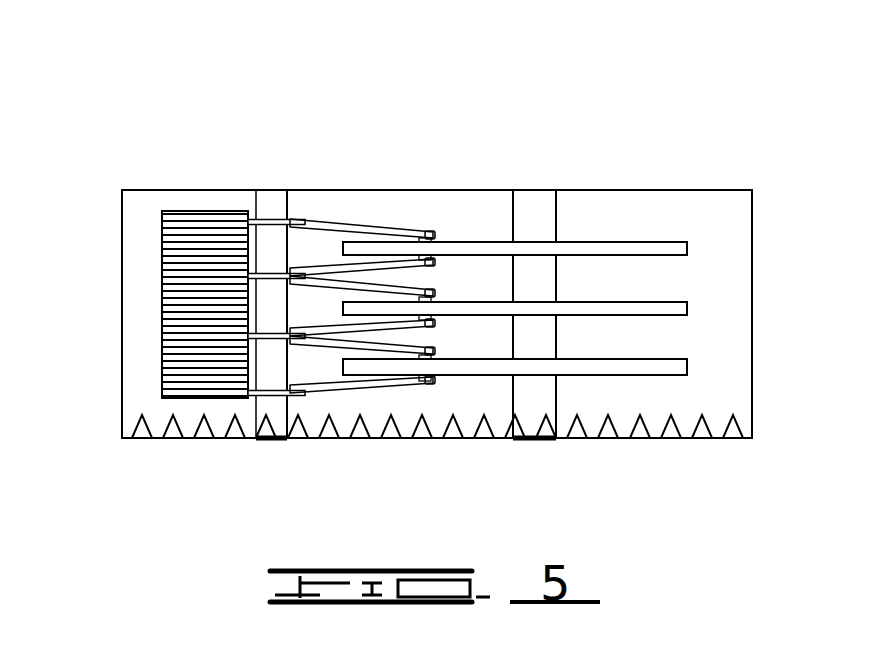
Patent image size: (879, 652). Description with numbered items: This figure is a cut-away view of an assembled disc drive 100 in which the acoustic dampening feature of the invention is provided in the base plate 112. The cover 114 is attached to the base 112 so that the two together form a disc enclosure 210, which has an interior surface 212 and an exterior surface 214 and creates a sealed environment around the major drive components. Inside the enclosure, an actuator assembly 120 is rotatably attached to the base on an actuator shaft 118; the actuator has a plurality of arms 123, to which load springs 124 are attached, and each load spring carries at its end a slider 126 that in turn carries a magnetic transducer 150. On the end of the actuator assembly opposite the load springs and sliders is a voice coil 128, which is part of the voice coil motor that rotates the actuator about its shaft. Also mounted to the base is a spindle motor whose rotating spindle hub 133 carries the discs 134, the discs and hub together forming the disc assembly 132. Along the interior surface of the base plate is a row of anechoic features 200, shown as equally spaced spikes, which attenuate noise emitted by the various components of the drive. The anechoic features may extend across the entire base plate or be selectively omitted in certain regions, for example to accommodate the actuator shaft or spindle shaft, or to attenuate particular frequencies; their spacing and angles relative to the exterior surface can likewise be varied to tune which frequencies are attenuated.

The disc drive 100 is at (660, 104).
The base plate 112 is at (187, 438).
The cover 114 is at (717, 190).
The actuator shaft 118 is at (257, 405).
The actuator assembly 120 is at (270, 248).
The arms 123 is at (300, 393).
The load springs 124 is at (395, 387).
The slider 126 is at (418, 386).
The voice coil 128 is at (197, 288).
The disc assembly 132 is at (557, 340).
The spindle hub 133 is at (547, 397).
The discs 134 is at (667, 377).
The magnetic transducer 150 is at (433, 382).
The anechoic features 200 is at (608, 440).
The disc enclosure 210 is at (468, 190).
The interior surface 212 is at (706, 438).
The exterior surface 214 is at (313, 190).